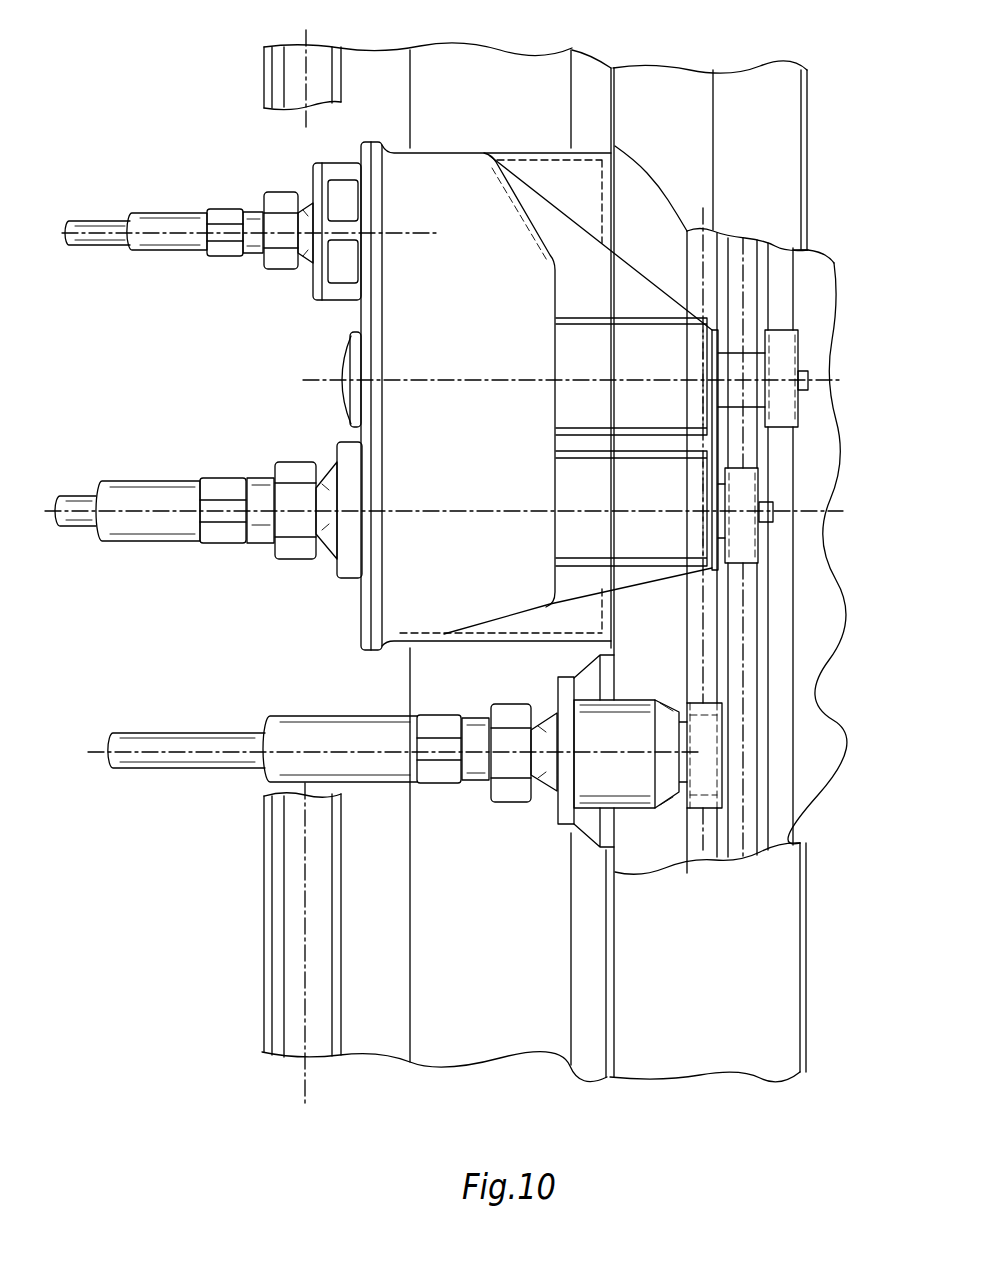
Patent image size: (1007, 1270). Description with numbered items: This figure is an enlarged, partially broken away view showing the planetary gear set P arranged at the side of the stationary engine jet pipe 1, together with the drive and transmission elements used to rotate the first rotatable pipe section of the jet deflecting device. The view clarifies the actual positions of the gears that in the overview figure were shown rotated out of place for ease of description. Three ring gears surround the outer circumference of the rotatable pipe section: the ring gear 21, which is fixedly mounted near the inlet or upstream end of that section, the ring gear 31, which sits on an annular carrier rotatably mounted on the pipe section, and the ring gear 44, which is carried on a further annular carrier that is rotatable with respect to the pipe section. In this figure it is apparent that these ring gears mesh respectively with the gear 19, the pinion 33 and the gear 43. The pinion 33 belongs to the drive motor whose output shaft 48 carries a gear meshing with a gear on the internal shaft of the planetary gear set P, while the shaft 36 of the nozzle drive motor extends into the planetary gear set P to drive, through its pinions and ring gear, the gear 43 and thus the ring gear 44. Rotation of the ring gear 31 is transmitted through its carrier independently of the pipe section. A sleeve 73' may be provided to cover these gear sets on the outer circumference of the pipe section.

The engine jet pipe 1 is at (480, 1048).
The gear 19 is at (678, 706).
The ring gear 21 is at (709, 845).
The ring gear 31 is at (748, 240).
The pinion 33 is at (748, 504).
The shaft 36 is at (118, 246).
The gear 43 is at (777, 371).
The ring gear 44 is at (796, 229).
The output shaft 48 is at (79, 527).
The sleeve 73' is at (708, 981).
The planetary gear set P is at (413, 403).